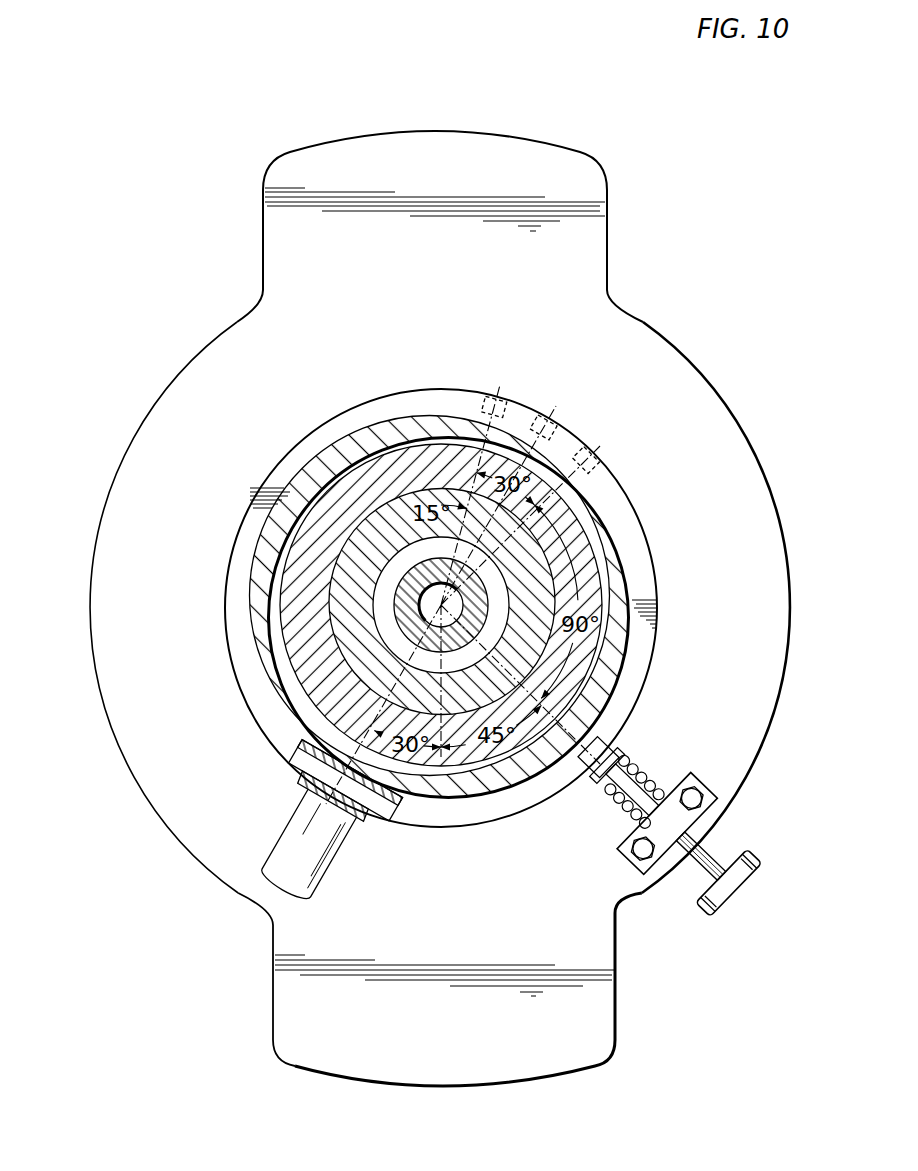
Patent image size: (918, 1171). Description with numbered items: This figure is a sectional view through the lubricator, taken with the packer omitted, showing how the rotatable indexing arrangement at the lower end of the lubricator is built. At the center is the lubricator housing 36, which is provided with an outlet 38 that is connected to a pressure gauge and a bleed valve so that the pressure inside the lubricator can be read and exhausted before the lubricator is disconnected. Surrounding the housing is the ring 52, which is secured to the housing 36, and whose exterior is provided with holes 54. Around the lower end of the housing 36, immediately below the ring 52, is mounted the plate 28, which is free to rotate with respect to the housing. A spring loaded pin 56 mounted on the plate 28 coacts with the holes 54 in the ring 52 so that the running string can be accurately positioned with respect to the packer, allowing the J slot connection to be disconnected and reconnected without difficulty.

The plate 28 is at (615, 998).
The lubricator housing 36 is at (265, 680).
The outlet 38 is at (335, 862).
The ring 52 is at (647, 527).
The holes 54 is at (600, 445).
The spring loaded pin 56 is at (655, 782).